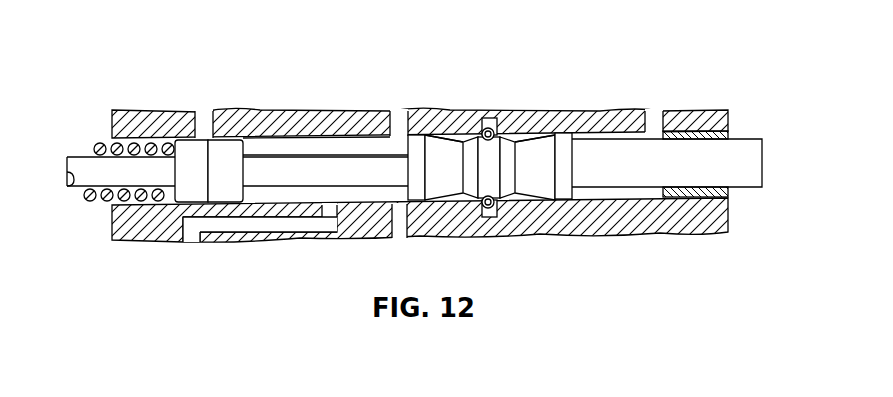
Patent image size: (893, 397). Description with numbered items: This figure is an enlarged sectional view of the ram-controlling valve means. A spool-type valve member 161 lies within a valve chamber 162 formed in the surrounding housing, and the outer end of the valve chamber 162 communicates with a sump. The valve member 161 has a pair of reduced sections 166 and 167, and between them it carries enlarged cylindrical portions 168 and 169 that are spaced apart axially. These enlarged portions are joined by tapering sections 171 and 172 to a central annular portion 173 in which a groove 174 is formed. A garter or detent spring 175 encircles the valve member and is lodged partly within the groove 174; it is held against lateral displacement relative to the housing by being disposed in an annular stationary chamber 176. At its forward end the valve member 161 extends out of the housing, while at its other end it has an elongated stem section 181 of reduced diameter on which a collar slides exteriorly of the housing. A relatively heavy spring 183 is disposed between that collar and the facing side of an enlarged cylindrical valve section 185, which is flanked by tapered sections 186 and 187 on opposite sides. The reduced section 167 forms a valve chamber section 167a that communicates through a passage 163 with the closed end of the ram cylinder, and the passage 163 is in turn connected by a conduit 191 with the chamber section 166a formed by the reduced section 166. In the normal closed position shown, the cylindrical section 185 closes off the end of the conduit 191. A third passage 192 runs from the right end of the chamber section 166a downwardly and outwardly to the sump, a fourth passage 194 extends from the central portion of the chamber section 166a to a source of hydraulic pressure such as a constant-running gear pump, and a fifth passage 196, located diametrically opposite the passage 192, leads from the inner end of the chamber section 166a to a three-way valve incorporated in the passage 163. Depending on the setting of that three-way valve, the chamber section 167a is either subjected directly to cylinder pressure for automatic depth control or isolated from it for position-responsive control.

The valve member 161 is at (343, 146).
The valve chamber 162 is at (613, 195).
The passage 163 is at (655, 120).
The reduced section 166 is at (289, 154).
The chamber section 166a is at (318, 146).
The reduced section 167 is at (597, 140).
The valve chamber section 167a is at (634, 128).
The enlarged cylindrical portion 168 is at (415, 165).
The enlarged cylindrical portion 169 is at (565, 165).
The tapering section 171 is at (440, 137).
The tapering section 172 is at (530, 138).
The central annular portion 173 is at (505, 175).
The groove 174 is at (480, 158).
The detent spring 175 is at (489, 118).
The annular stationary chamber 176 is at (489, 216).
The stem section 181 is at (85, 180).
The spring 183 is at (100, 143).
The enlarged cylindrical valve section 185 is at (213, 192).
The tapered section 186 is at (185, 140).
The tapered section 187 is at (236, 139).
The conduit 191 is at (207, 120).
The passage 192 is at (401, 222).
The passage 194 is at (330, 208).
The passage 196 is at (398, 122).